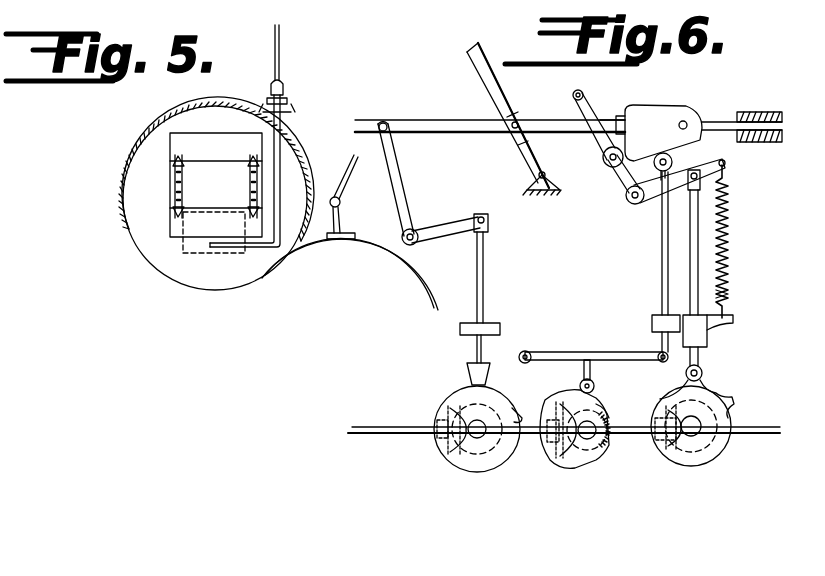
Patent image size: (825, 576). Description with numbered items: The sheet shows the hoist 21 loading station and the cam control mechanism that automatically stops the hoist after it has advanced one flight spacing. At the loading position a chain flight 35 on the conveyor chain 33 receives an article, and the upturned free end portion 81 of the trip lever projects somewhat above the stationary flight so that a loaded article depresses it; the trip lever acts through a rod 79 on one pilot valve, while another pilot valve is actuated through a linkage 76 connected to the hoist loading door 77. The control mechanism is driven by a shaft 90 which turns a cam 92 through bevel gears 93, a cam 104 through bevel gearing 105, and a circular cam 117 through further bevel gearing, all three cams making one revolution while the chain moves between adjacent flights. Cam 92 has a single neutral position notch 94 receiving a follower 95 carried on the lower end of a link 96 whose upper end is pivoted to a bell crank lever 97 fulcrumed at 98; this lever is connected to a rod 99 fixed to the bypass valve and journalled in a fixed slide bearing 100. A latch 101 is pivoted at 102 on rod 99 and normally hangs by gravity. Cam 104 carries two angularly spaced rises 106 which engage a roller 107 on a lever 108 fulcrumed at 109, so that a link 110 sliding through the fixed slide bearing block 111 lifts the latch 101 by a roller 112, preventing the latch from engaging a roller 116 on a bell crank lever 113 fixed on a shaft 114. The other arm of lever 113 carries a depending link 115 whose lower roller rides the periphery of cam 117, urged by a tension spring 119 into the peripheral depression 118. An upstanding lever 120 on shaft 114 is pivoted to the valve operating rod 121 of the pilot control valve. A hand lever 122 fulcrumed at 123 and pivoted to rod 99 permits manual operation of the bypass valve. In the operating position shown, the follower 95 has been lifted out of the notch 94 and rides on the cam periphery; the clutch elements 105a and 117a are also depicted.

In FIG. 5, the hoist 21 is at (148, 128).
In FIG. 5, the chain flight 35 is at (199, 144).
In FIG. 5, the conveyor chain 33 is at (174, 179).
In FIG. 5, the upturned free end portion 81 is at (223, 250).
In FIG. 5, the rod 79 is at (280, 60).
In FIG. 5, the linkage 76 is at (345, 180).
In FIG. 5, the hoist loading door 77 is at (370, 250).
In FIG. 6, the rod 99 is at (431, 121).
In FIG. 6, the upstanding lever 120 is at (602, 130).
In FIG. 6, the bell crank lever 97 is at (402, 179).
In FIG. 6, the fulcrum 98 is at (418, 232).
In FIG. 6, the link 96 is at (484, 255).
In FIG. 6, the follower 95 is at (467, 372).
In FIG. 6, the shaft 90 is at (387, 434).
In FIG. 6, the cam 92 is at (440, 406).
In FIG. 6, the neutral position notch 94 is at (512, 412).
In FIG. 6, the bevel gears 93 is at (458, 455).
In FIG. 6, the cam 104 is at (565, 465).
In FIG. 6, the bevel gearing 105 is at (556, 462).
In FIG. 6, the rises 106 is at (585, 480).
In FIG. 6, the cam lobe 105a is at (606, 470).
In FIG. 6, the fulcrum 109 is at (530, 352).
In FIG. 6, the roller 107 is at (597, 388).
In FIG. 6, the lever 108 is at (626, 355).
In FIG. 6, the roller 116 is at (702, 372).
In FIG. 6, the link 110 is at (661, 272).
In FIG. 6, the fixed slide bearing block 111 is at (660, 314).
In FIG. 6, the valve operating rod 121 is at (620, 96).
In FIG. 6, the bell crank lever 113 is at (628, 196).
In FIG. 6, the shaft 114 is at (635, 205).
In FIG. 6, the roller 112 is at (673, 160).
In FIG. 6, the latch 101 is at (643, 112).
In FIG. 6, the pivot 102 is at (686, 121).
In FIG. 6, the fixed slide bearing 100 is at (761, 112).
In FIG. 6, the hand lever 122 is at (503, 92).
In FIG. 6, the fulcrum 123 is at (538, 176).
In FIG. 6, the depending link 115 is at (729, 218).
In FIG. 6, the tension spring 119 is at (730, 248).
In FIG. 6, the cam 117 is at (709, 466).
In FIG. 6, the peripheral depression 118 is at (720, 402).
In FIG. 6, the clutch member 117a is at (668, 468).